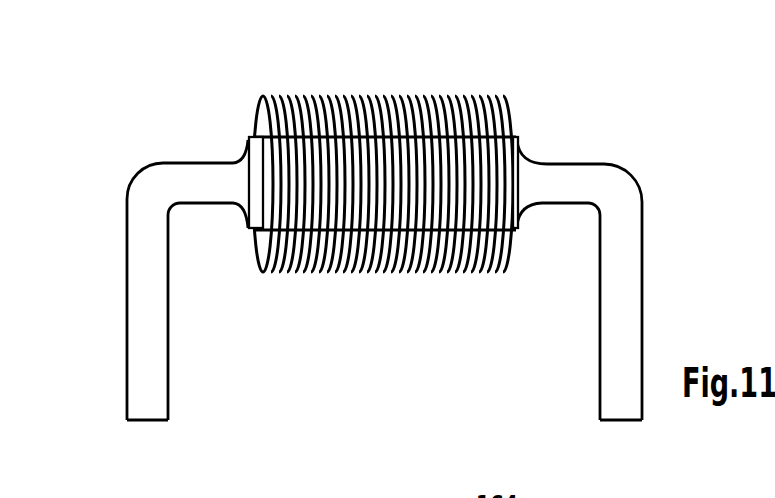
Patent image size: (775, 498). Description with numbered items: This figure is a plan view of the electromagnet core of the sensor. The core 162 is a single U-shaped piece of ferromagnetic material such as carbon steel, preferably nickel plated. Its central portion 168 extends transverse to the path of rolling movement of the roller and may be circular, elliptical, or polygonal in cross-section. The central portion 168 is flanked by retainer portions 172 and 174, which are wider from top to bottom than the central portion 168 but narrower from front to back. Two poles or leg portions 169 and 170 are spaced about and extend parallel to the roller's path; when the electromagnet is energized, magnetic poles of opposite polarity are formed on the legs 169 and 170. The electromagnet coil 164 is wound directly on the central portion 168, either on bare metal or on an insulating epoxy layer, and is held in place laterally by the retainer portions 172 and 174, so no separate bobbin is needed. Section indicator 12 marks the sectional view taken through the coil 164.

The section line indicator for FIG. 12 is at (315, 258).
The core 162 is at (130, 156).
The electromagnet coil 164 is at (435, 112).
The central portion 168 is at (386, 243).
The leg portion 169 is at (147, 320).
The leg portion 170 is at (623, 302).
The retainer portion 172 is at (530, 178).
The retainer portion 174 is at (245, 177).